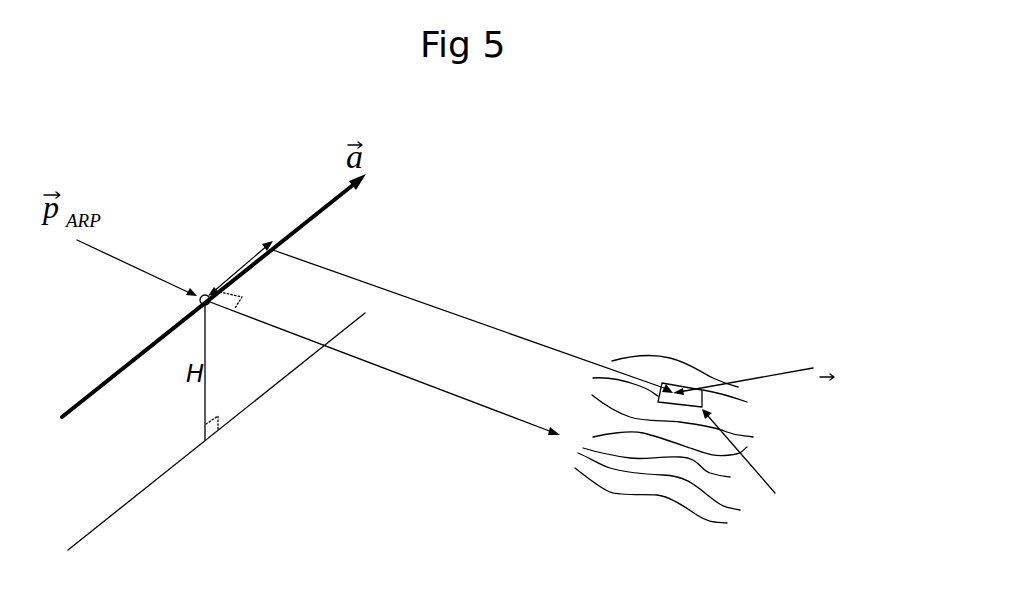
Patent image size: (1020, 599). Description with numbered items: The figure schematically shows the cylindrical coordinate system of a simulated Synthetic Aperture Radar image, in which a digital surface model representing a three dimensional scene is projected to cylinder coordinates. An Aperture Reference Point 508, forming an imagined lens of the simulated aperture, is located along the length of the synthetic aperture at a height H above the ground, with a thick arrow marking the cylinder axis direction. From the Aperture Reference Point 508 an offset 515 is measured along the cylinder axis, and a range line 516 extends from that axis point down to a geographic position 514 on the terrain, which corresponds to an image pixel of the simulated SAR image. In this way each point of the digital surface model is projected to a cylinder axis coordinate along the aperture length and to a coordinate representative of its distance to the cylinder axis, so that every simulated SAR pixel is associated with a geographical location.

The Aperture Reference Point 508 is at (191, 294).
The geographic position of image pixel 514 is at (685, 388).
The cylindrical axial offset X_cyl along antenna axis 515 is at (266, 256).
The range R_b from antenna axis point to geographic position 516 is at (317, 262).